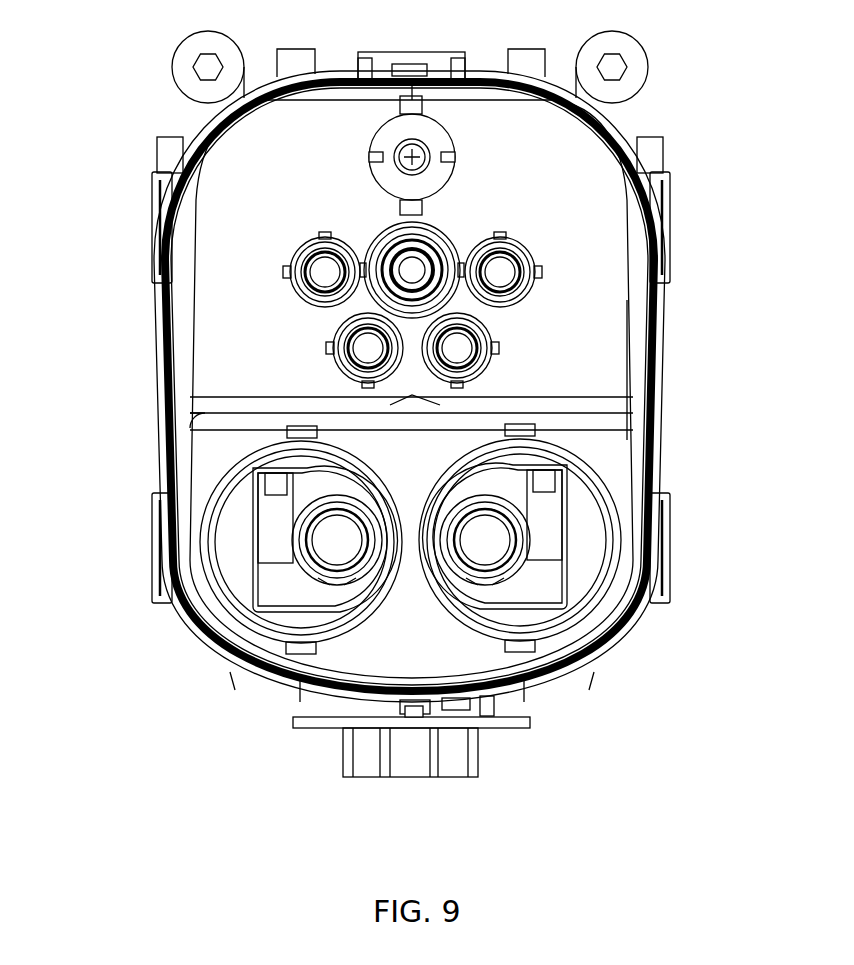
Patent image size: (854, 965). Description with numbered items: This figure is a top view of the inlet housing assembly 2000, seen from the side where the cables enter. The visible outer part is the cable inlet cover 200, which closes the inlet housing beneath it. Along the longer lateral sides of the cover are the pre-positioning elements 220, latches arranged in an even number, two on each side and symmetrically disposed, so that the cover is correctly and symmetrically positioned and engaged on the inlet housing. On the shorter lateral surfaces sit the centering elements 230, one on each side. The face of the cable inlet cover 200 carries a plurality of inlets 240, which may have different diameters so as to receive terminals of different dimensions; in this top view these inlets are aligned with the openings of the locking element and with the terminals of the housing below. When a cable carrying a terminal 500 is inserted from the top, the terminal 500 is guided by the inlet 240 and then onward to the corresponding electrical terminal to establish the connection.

The inlet housing assembly 2000 is at (106, 126).
The cable inlet cover 200 is at (565, 345).
The pre-positioning element 220 is at (672, 240).
The inlet 240 is at (274, 298).
The cable terminal 500 is at (420, 262).
The centering element 230 is at (477, 700).